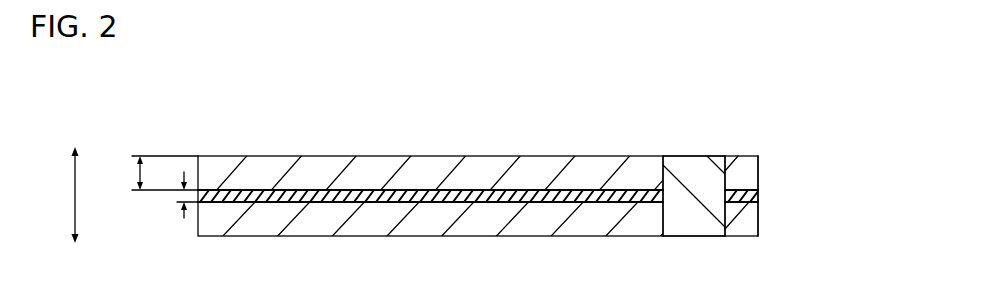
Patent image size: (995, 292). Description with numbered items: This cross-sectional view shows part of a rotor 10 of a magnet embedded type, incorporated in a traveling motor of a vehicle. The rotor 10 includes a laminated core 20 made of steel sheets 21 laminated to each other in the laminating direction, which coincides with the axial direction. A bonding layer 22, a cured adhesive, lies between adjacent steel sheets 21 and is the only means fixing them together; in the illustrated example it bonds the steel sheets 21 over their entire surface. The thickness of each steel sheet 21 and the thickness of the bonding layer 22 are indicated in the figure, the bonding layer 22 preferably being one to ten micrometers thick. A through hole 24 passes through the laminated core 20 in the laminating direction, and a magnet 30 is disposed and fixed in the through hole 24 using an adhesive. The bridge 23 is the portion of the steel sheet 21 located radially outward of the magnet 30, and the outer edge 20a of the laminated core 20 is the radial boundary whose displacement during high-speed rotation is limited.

The rotor 10 is at (772, 110).
The laminated core 20 is at (166, 140).
The outer edge 20a is at (758, 218).
The steel sheet 21 is at (312, 168).
The bonding layer 22 is at (373, 199).
The bridge 23 is at (752, 173).
The through hole 24 is at (664, 222).
The magnet 30 is at (703, 157).